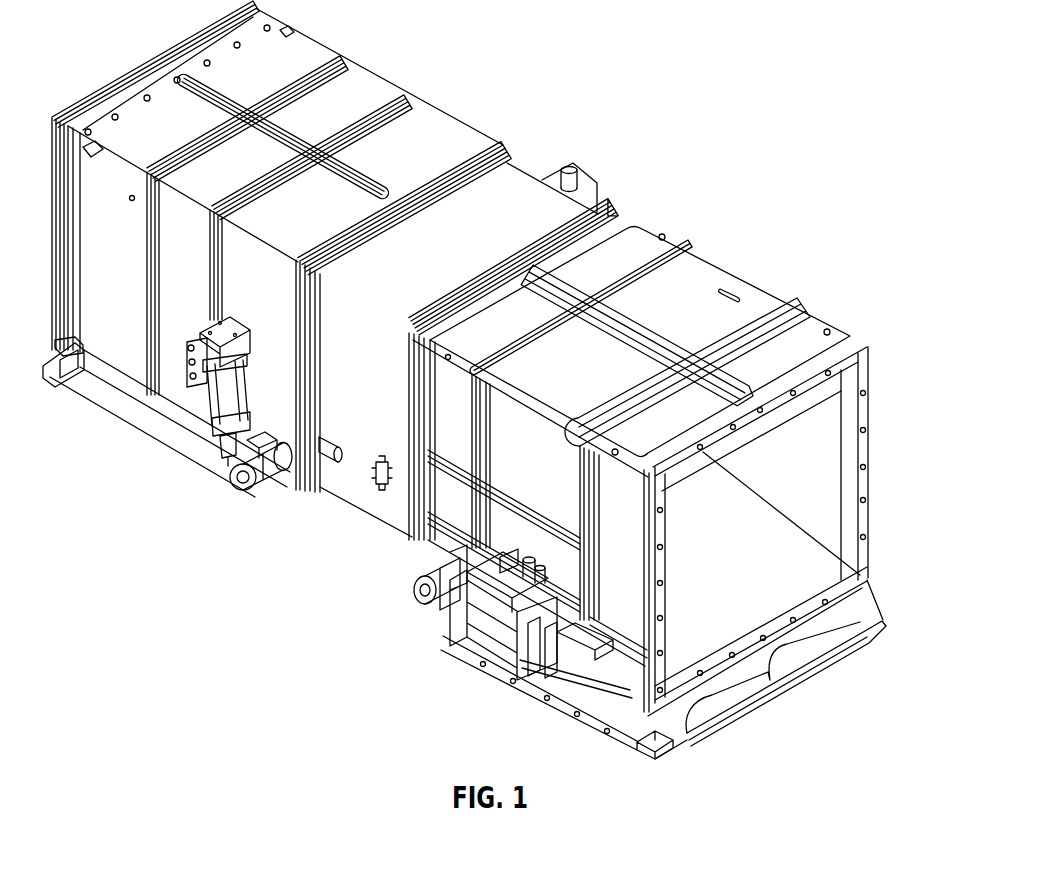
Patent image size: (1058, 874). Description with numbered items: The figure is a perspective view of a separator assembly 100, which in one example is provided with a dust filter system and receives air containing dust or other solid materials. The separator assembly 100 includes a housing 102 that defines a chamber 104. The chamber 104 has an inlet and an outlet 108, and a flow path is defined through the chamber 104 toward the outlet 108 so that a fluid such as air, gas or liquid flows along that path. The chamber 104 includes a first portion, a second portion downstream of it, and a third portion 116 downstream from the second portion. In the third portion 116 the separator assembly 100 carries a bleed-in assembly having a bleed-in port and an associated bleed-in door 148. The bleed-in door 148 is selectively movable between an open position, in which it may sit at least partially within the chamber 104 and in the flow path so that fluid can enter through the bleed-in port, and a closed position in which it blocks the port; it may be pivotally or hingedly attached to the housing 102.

The separator assembly 100 is at (500, 380).
The housing 102 is at (367, 80).
The chamber 104 is at (813, 483).
The outlet 108 is at (867, 377).
The third portion 116 is at (797, 423).
The bleed-in door 148 is at (790, 567).